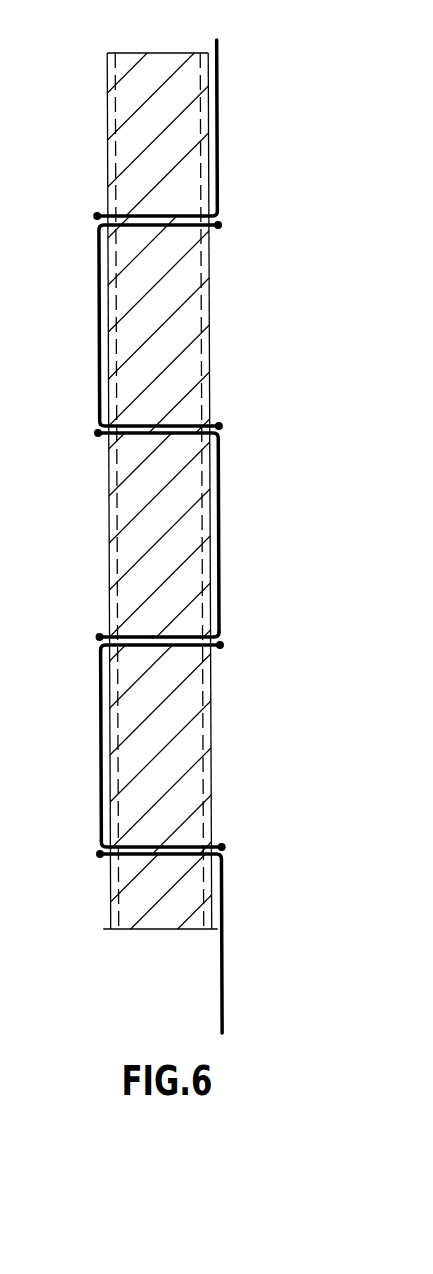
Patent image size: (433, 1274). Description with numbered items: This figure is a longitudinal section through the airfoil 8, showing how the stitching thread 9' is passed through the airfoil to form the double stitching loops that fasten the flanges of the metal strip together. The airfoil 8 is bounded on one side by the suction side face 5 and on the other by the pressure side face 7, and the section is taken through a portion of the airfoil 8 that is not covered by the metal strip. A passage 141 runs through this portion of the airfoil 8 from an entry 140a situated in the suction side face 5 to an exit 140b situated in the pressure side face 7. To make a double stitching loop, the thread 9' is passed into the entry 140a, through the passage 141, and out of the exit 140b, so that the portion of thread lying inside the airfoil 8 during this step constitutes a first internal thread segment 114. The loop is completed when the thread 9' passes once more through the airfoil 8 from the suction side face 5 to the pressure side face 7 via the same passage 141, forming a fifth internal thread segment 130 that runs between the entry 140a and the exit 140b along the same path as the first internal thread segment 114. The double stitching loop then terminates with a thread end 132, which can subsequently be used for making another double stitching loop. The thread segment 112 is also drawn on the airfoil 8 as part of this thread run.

The suction side face 5 is at (107, 122).
The pressure side face 7 is at (210, 320).
The airfoil 8 is at (158, 72).
The thread 9' is at (182, 943).
The first wire section 112 is at (100, 765).
The first internal thread segment 114 is at (172, 647).
The fifth internal thread segment 130 is at (147, 633).
The thread end 132 is at (222, 485).
The entry 140a is at (100, 637).
The exit 140b is at (221, 645).
The passage 141 is at (185, 632).